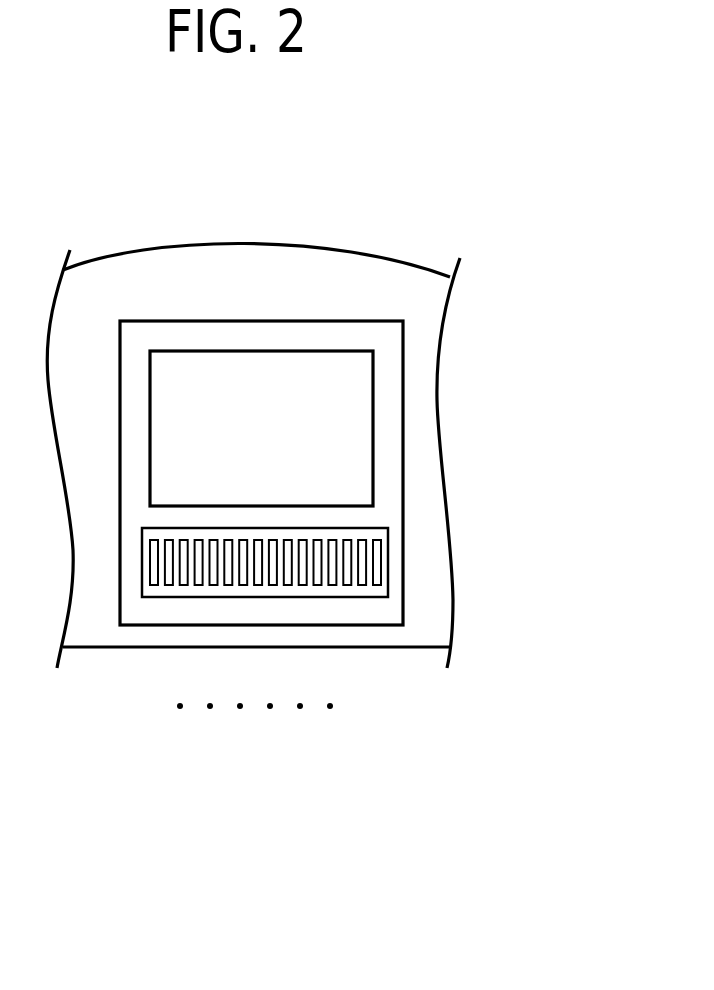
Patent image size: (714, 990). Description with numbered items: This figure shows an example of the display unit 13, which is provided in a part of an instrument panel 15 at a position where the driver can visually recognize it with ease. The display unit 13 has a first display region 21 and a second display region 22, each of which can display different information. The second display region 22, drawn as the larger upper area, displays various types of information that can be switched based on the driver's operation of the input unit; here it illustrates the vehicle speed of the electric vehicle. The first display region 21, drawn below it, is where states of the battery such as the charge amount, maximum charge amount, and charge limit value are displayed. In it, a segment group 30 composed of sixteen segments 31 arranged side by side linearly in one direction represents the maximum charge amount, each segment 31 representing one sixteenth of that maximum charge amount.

The display unit 13 is at (208, 321).
The instrument panel 15 is at (274, 272).
The first display region 21 is at (390, 566).
The second display region 22 is at (374, 405).
The segment group 30 is at (257, 671).
The segment 31 is at (377, 733).